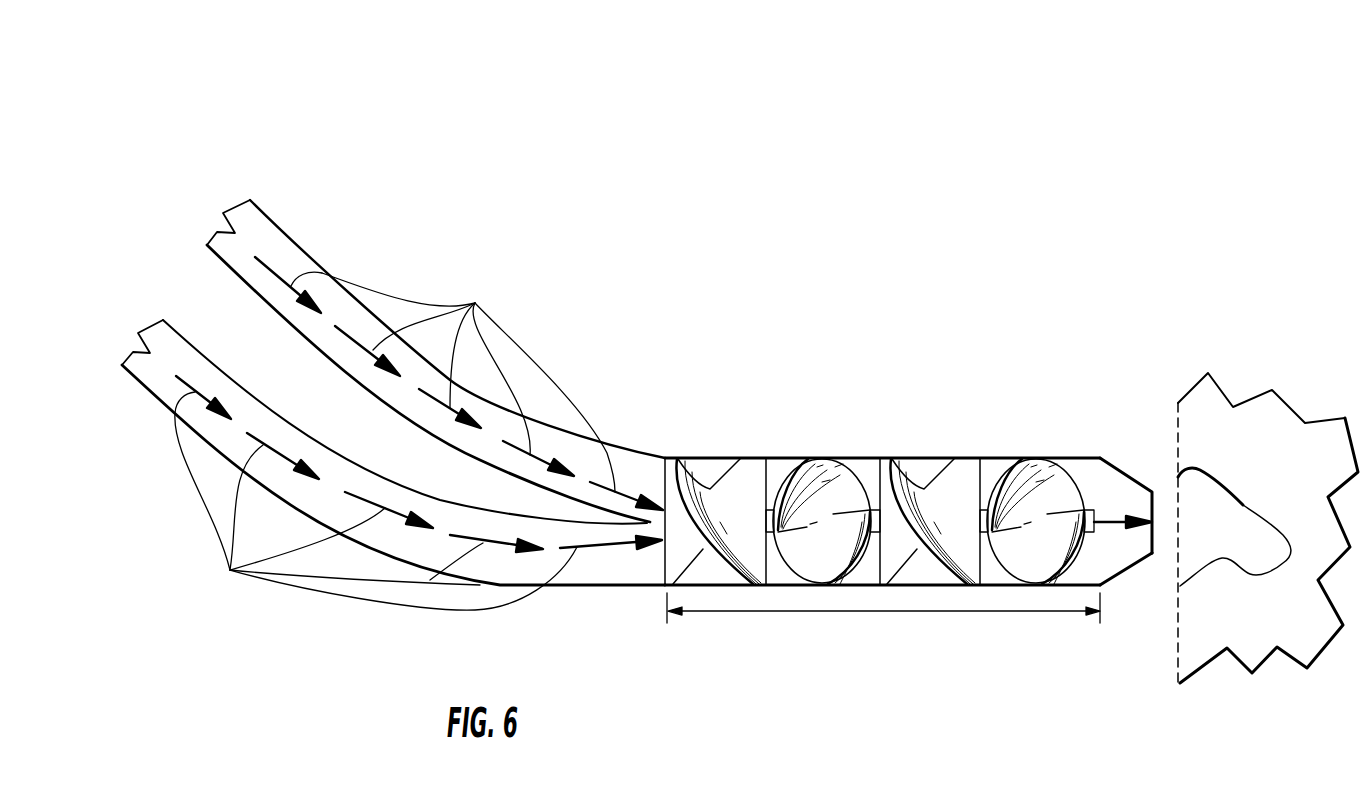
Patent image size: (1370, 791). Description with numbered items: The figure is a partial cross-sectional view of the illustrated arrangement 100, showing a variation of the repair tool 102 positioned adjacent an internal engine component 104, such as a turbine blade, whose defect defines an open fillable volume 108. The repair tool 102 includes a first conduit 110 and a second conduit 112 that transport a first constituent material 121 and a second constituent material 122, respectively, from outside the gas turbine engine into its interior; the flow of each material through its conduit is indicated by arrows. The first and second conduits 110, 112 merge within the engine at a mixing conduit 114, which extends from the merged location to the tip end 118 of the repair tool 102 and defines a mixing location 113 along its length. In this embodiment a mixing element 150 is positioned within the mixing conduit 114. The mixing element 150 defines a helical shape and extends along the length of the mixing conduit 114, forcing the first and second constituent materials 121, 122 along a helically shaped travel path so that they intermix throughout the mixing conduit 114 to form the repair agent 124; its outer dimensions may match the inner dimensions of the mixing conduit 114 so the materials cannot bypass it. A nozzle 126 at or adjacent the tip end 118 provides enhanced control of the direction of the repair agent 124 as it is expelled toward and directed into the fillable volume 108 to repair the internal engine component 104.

The fluid mixing system 100 is at (949, 122).
The repair tool 102 is at (467, 215).
The internal engine component 104 is at (1285, 403).
The fillable volume 108 is at (1232, 545).
The first conduit 110 is at (273, 228).
The second conduit 112 is at (148, 395).
The mixing location 113 is at (1100, 648).
The mixing conduit 114 is at (918, 470).
The tip end 118 is at (1158, 503).
The first constituent material 121 is at (453, 382).
The second constituent material 122 is at (376, 501).
The repair agent 124 is at (1112, 522).
The nozzle 126 is at (1123, 557).
The mixing element 150 is at (753, 475).